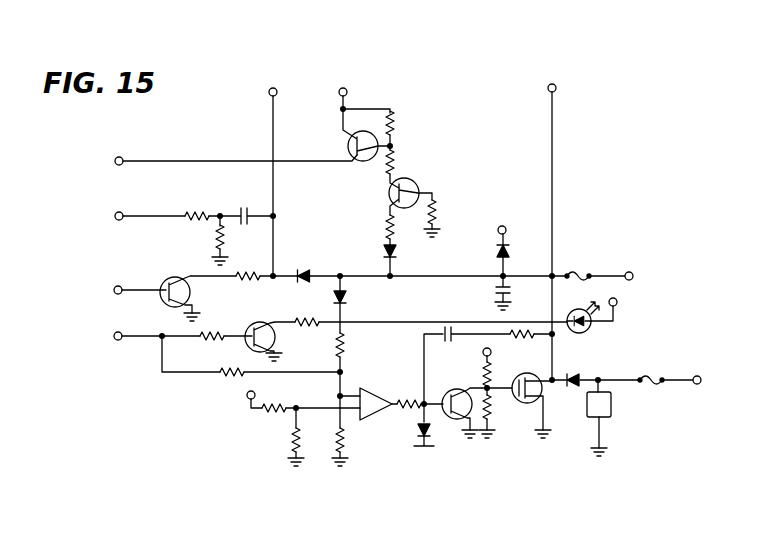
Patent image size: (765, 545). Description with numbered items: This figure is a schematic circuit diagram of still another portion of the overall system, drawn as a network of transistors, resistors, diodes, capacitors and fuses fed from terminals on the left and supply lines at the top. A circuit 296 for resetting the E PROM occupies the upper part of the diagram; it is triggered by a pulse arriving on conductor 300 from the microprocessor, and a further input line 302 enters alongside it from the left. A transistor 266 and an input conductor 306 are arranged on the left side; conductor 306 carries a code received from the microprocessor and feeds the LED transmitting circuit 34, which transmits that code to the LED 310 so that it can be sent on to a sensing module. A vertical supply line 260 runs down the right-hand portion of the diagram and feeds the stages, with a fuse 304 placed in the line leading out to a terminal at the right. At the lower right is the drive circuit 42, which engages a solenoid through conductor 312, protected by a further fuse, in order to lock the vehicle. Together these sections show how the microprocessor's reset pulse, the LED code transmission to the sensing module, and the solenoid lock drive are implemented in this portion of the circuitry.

The conductor 300 is at (205, 161).
The input line 302 is at (220, 216).
The circuit for resetting the E PROM 296 is at (467, 134).
The transistor 266 is at (160, 279).
The conductor 306 is at (162, 336).
The supply line 260 is at (552, 193).
The fuse 304 is at (620, 233).
The LED transmitting circuit 34 is at (628, 303).
The LED 310 is at (583, 332).
The conductor 312 is at (678, 380).
The drive circuit 42 is at (550, 452).